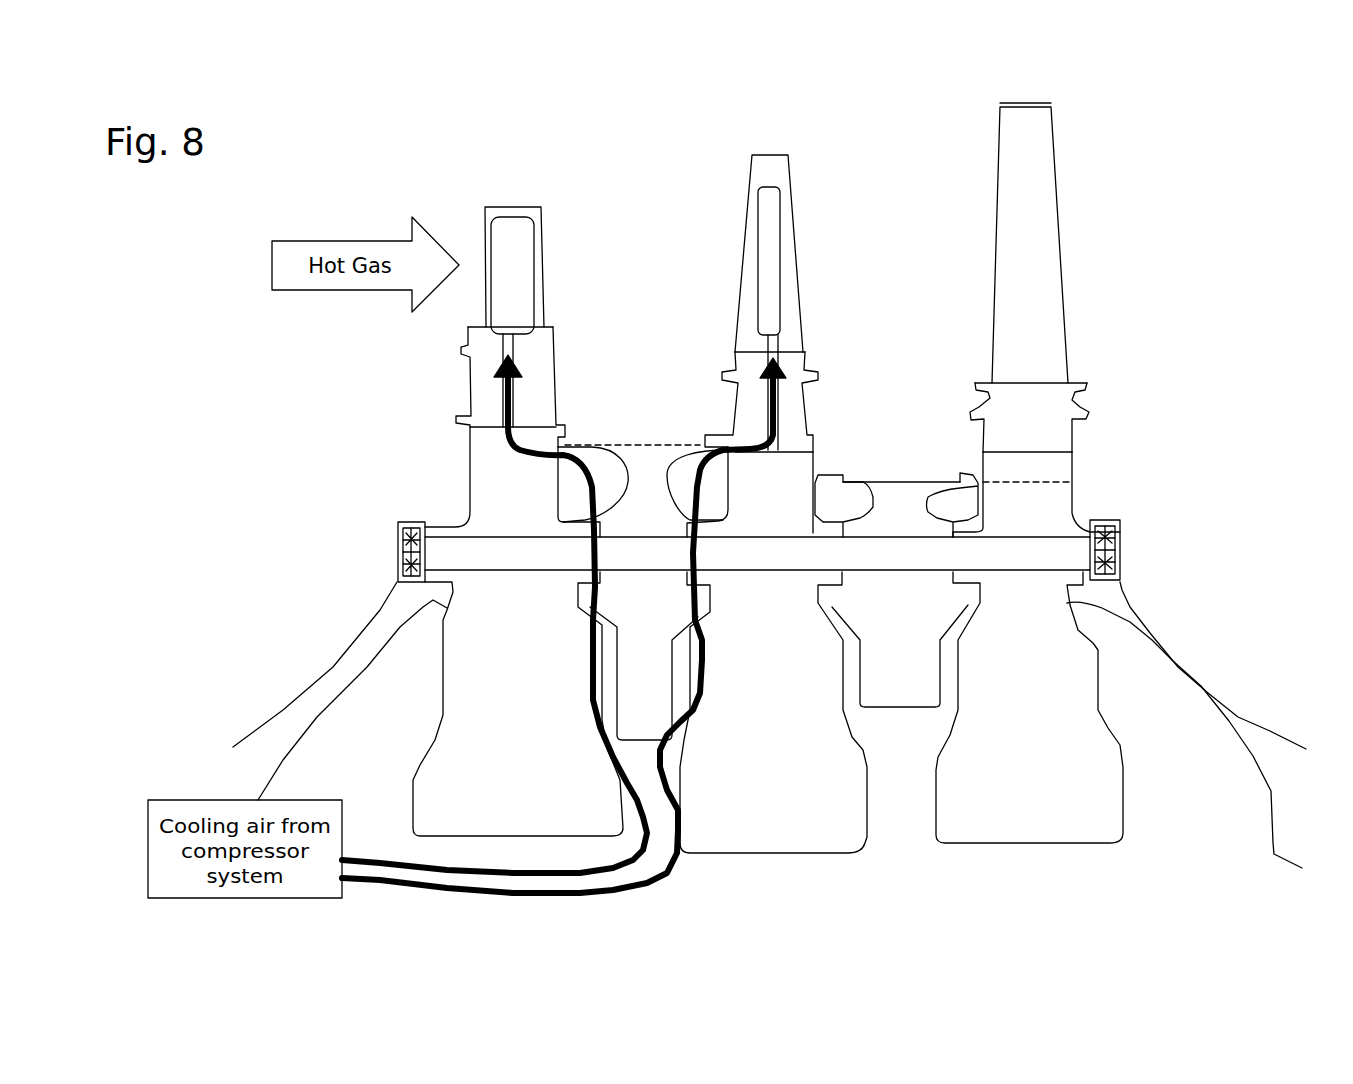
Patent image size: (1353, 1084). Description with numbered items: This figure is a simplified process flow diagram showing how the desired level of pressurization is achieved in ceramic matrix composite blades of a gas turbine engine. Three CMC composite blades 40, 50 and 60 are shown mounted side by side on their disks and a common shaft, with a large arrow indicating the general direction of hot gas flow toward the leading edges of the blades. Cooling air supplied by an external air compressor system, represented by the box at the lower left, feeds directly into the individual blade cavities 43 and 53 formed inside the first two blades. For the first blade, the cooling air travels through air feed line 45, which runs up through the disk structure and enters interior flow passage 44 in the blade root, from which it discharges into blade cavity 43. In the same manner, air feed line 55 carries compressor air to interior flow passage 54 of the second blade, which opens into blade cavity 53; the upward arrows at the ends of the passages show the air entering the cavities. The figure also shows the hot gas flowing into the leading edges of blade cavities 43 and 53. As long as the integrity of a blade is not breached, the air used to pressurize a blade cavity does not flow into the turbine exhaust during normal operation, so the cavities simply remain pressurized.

The CMC composite blade 40 is at (553, 270).
The blade cavity 43 is at (507, 241).
The interior flow passage 44 is at (498, 407).
The air feed line 45 is at (598, 602).
The CMC composite blade 50 is at (803, 241).
The blade cavity 53 is at (771, 218).
The interior flow passage 54 is at (770, 345).
The air feed line 55 is at (703, 653).
The CMC composite blade 60 is at (1071, 203).